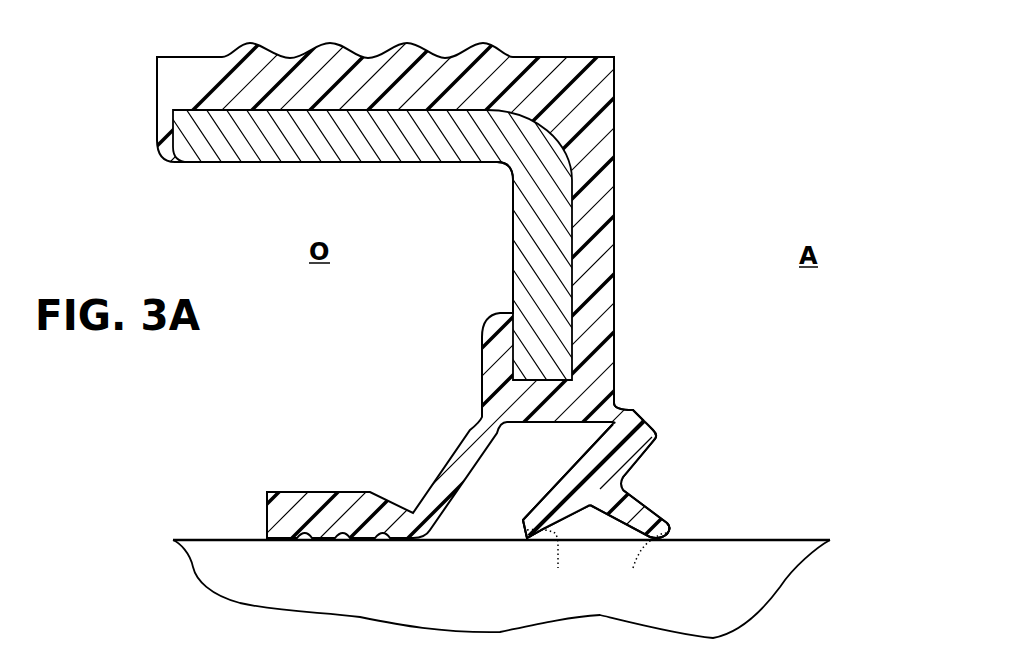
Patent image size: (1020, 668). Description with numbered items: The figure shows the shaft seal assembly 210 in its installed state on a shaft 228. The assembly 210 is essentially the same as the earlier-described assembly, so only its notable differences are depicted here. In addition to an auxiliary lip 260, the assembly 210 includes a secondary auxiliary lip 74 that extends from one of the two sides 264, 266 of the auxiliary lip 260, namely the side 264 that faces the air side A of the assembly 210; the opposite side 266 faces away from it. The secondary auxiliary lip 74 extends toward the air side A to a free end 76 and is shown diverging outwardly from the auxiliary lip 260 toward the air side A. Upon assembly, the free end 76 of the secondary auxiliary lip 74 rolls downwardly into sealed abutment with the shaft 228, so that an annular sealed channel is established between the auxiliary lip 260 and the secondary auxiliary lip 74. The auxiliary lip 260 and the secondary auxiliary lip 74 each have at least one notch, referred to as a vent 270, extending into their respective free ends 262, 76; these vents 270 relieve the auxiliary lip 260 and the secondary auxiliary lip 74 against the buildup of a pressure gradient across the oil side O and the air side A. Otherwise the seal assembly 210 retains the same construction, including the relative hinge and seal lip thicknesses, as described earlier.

The shaft seal assembly 210 is at (706, 111).
The side of auxiliary lip 264 is at (627, 482).
The side of auxiliary lip 266 is at (607, 458).
The auxiliary lip 260 is at (572, 497).
The free end of auxiliary lip 262 is at (520, 538).
The secondary auxiliary lip 74 is at (681, 518).
The free end of secondary auxiliary lip 76 is at (663, 542).
The vent 270 is at (597, 560).
The shaft 228 is at (753, 539).